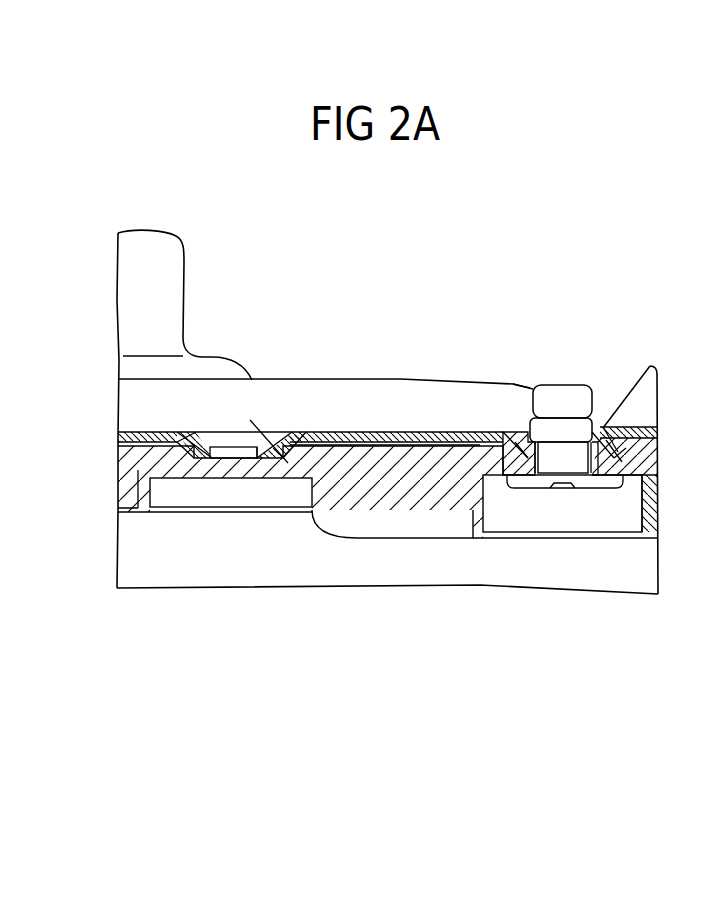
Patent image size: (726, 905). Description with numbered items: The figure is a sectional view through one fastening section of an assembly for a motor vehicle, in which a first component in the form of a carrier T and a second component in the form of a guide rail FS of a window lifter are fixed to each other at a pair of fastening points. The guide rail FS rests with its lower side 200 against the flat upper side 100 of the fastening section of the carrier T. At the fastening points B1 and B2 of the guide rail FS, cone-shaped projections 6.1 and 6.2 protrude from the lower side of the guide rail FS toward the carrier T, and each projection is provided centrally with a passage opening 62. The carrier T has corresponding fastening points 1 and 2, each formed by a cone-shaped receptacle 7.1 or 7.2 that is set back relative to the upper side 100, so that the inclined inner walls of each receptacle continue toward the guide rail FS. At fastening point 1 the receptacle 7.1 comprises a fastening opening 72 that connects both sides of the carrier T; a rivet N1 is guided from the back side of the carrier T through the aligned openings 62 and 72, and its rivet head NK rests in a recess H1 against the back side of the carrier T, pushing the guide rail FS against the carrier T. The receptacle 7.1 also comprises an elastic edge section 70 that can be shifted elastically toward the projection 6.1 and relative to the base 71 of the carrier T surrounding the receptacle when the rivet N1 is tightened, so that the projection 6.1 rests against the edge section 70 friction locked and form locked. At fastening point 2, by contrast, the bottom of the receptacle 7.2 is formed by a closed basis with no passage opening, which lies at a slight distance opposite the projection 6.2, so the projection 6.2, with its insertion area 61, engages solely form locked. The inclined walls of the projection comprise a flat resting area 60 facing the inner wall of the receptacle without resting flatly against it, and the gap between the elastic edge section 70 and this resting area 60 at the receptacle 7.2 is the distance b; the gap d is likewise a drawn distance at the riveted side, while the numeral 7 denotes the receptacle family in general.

The fastening point 1 is at (622, 449).
The fastening point 2 is at (177, 490).
The projection 6.1 is at (600, 422).
The projection 6.2 is at (203, 436).
The seal 7 is at (663, 434).
The receptacle 7.1 is at (612, 423).
The receptacle 7.2 is at (262, 452).
The resting area 60 is at (175, 453).
The insertion area 61 is at (272, 455).
The passage opening 62 is at (237, 453).
The elastic edge section 70 is at (520, 432).
The base 71 is at (456, 488).
The fastening opening 72 is at (612, 483).
The upper side 100 is at (417, 432).
The lower side 200 is at (357, 440).
The rivet N1 is at (558, 386).
The rivet head NK is at (592, 468).
The fastening point B1 is at (519, 385).
The fastening point B2 is at (222, 393).
The recess H1 is at (573, 515).
The guide rail FS is at (423, 452).
The carrier T is at (482, 598).
The distance b is at (275, 447).
The gap d is at (616, 457).